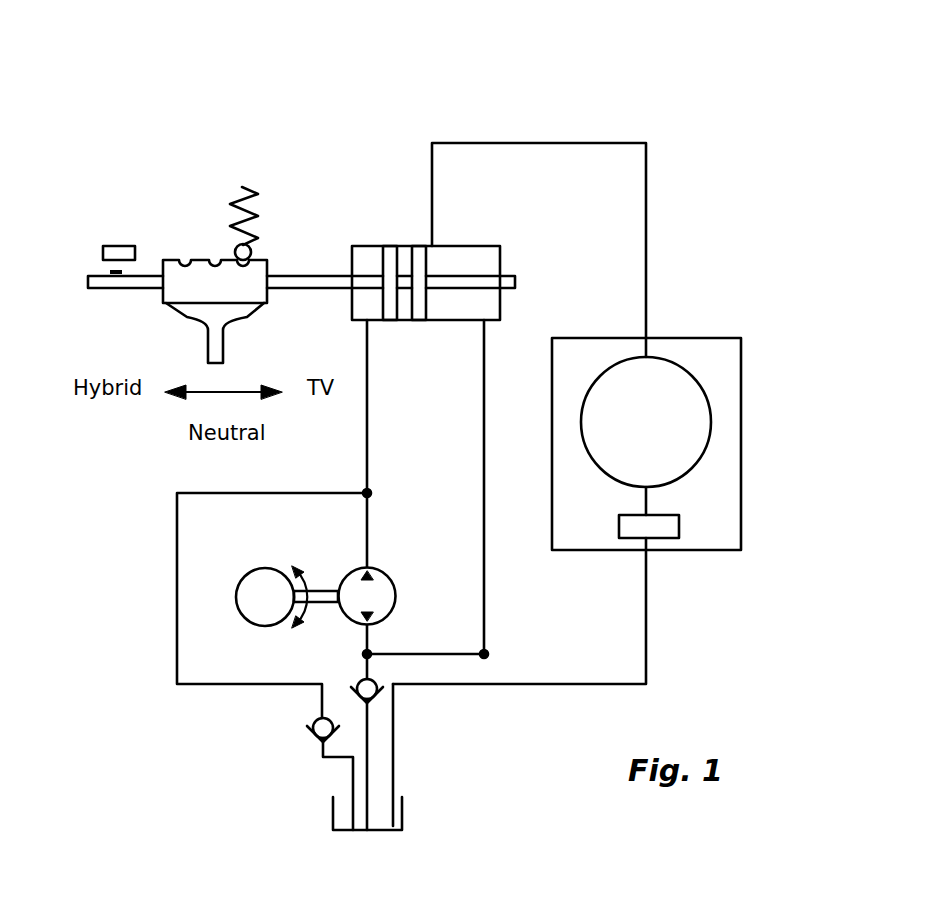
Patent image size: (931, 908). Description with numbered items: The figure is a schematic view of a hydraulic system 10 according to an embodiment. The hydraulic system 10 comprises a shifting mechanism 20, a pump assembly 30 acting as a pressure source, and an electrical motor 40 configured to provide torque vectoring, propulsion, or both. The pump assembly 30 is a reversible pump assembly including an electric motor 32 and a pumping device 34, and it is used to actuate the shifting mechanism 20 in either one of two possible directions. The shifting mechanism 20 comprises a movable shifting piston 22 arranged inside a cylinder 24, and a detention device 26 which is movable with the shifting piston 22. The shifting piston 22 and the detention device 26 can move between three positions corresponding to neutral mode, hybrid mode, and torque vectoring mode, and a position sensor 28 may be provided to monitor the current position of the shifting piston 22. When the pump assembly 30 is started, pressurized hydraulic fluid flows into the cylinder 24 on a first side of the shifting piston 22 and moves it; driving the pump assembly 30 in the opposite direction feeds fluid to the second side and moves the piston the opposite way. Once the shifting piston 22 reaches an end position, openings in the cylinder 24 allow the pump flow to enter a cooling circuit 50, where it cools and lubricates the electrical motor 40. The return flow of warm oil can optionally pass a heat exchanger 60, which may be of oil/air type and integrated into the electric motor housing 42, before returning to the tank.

The hydraulic system 10 is at (522, 88).
The shifting mechanism 20 is at (322, 222).
The shifting piston 22 is at (442, 273).
The cylinder 24 is at (502, 255).
The detention device 26 is at (163, 295).
The position sensor 28 is at (119, 246).
The pump assembly 30 is at (385, 545).
The electric motor 32 is at (240, 615).
The pumping device 34 is at (395, 590).
The electrical motor 40 is at (693, 377).
The electric motor housing 42 is at (741, 408).
The cooling circuit 50 is at (646, 280).
The heat exchanger 60 is at (630, 540).